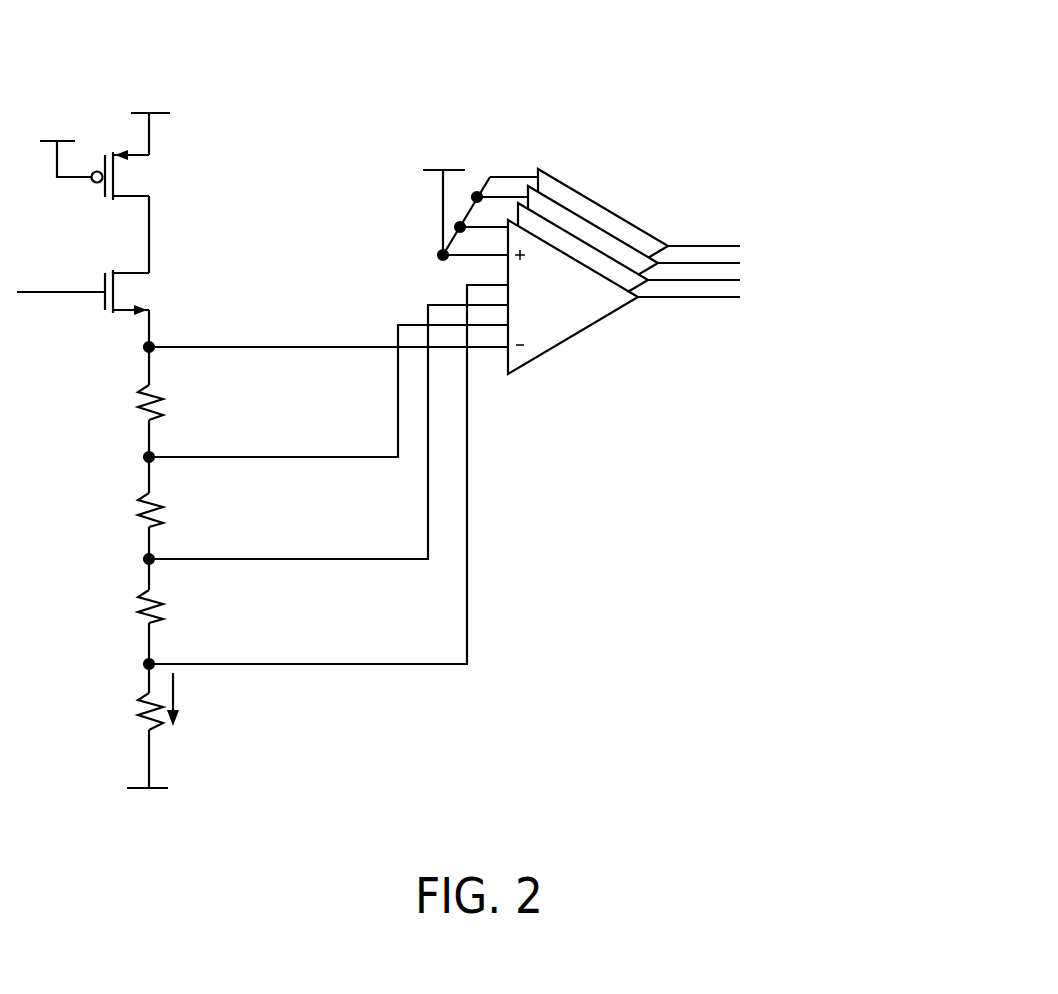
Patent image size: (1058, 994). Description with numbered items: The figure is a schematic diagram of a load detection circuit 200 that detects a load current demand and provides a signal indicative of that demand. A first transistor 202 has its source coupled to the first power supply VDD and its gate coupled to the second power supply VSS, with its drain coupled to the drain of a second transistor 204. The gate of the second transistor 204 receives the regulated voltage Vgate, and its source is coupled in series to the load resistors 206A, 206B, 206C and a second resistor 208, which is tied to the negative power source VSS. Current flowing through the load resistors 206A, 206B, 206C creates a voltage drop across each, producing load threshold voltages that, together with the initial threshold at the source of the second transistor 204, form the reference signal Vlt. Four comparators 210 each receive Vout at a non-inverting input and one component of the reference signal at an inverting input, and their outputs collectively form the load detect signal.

The load detection circuit 200 is at (475, 416).
The first transistor 202 is at (128, 188).
The second transistor 204 is at (128, 272).
The load resistor 206A is at (140, 402).
The load resistor 206B is at (140, 495).
The load resistor 206C is at (140, 592).
The second resistor 208 is at (152, 730).
The comparators 210 is at (578, 126).